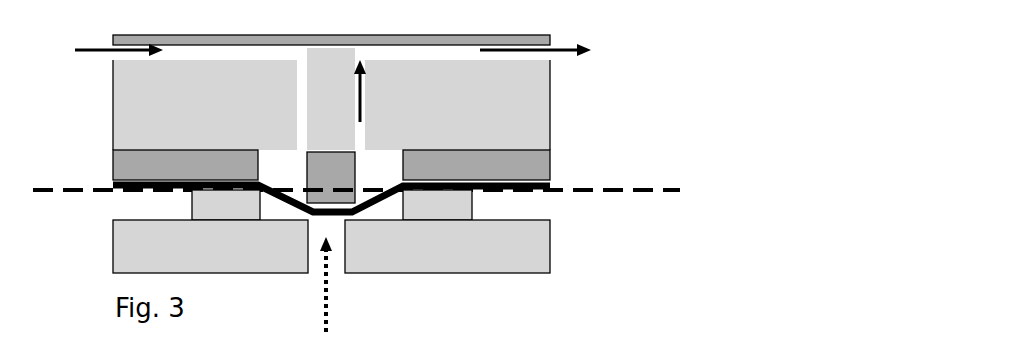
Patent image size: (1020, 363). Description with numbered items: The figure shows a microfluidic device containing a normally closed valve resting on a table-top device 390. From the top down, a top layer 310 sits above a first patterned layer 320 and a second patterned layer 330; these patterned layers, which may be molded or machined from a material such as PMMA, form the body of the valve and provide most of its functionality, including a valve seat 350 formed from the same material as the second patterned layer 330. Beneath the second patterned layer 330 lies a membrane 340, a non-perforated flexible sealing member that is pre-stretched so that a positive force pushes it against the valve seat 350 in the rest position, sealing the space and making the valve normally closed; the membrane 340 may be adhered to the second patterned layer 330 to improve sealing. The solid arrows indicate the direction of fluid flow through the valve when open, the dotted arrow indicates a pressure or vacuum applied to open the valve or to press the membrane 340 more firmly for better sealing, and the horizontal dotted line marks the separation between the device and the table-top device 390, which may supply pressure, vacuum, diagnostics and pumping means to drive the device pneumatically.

The top layer 310 is at (562, 35).
The first patterned layer 320 is at (562, 103).
The second patterned layer 330 is at (562, 162).
The membrane 340 is at (550, 185).
The valve seat 350 is at (324, 163).
The table-top device 390 is at (508, 248).